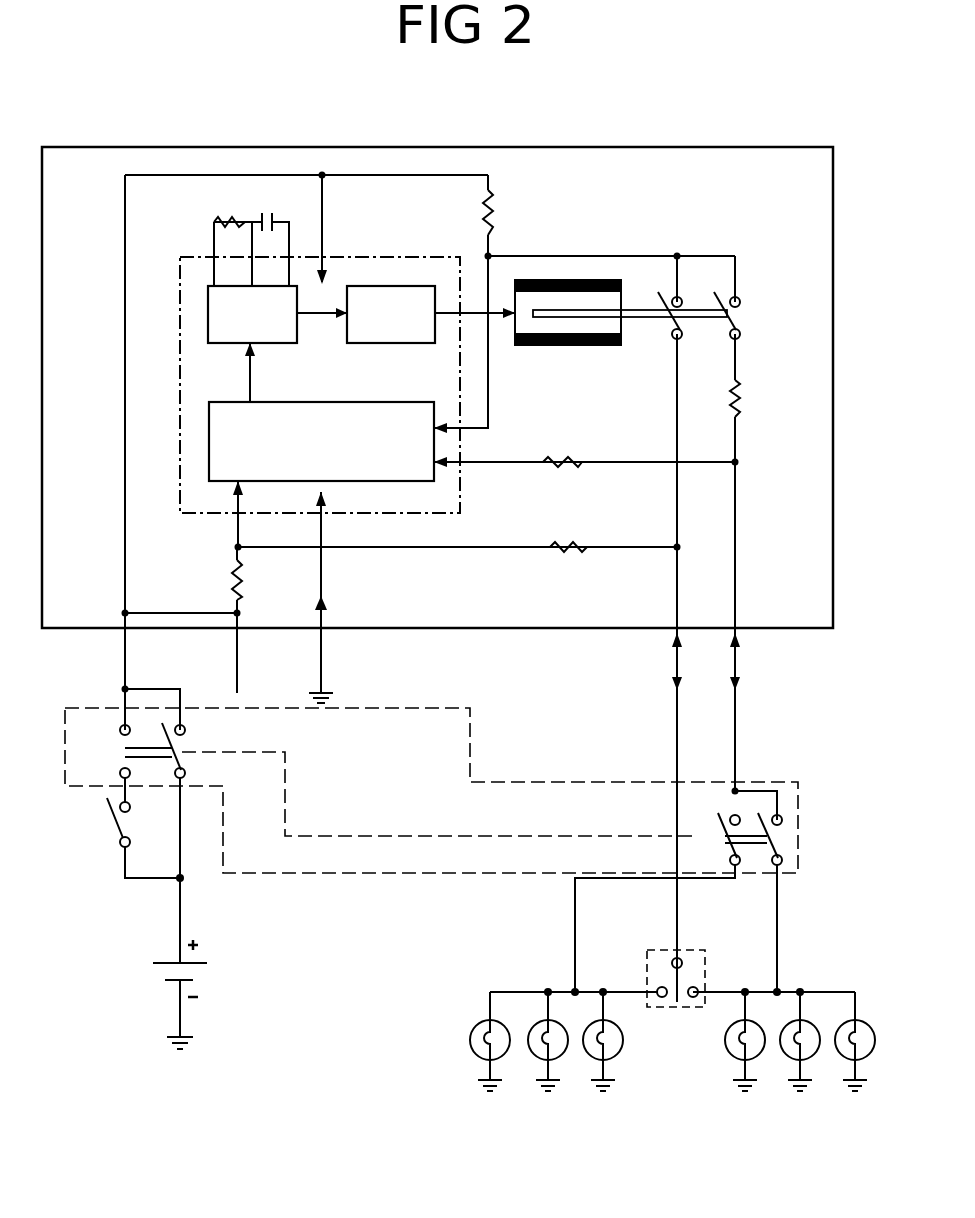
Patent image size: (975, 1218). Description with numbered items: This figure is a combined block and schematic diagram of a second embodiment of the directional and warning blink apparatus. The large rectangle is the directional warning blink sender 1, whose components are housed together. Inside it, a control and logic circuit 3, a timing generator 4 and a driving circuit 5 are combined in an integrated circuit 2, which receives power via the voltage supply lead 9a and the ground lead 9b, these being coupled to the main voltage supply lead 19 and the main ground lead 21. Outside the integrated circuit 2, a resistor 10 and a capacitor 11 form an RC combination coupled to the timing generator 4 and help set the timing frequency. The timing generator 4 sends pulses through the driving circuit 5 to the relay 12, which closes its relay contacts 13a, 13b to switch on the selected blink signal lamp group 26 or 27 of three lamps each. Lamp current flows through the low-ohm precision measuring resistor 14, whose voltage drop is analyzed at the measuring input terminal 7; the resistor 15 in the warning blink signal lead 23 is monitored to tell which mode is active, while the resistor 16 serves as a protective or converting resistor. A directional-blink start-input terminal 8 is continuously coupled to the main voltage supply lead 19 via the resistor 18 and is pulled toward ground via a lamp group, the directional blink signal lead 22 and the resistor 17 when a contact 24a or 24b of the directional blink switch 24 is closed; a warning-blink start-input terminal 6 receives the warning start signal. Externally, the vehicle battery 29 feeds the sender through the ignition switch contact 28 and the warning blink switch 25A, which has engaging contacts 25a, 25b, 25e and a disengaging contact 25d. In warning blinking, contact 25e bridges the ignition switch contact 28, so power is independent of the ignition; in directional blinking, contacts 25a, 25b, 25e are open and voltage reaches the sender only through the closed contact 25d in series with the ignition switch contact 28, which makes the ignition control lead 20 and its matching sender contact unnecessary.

The directional warning blink sender 1 is at (768, 147).
The integrated circuit 2 is at (462, 494).
The control and logic circuit 3 is at (311, 402).
The timing generator 4 is at (219, 344).
The driving circuit 5 is at (398, 344).
The warning-blink, start-input terminal 6 is at (433, 462).
The measuring input terminal 7 is at (433, 428).
The directional-blink, start-input terminal 8 is at (238, 478).
The voltage supply lead 9a is at (323, 220).
The ground lead 9b is at (323, 537).
The resistor 10 is at (238, 218).
The capacitor 11 is at (270, 200).
The relay 12 is at (583, 345).
The relay contact 13a is at (660, 300).
The relay contact 13b is at (733, 318).
The precision measuring resistor 14 is at (492, 214).
The resistor 15 is at (757, 381).
The resistor 16 is at (577, 457).
The resistor 17 is at (578, 544).
The resistor 18 is at (241, 592).
The main voltage supply lead 19 is at (127, 640).
The ignition control lead 20 is at (238, 643).
The main ground lead 21 is at (322, 642).
The directional blink signal lead 22 is at (675, 702).
The warning blink signal lead 23 is at (737, 717).
The directional blink switch 24 is at (689, 1005).
The directional blink switch contact 24a is at (660, 1000).
The directional blink switch contact 24b is at (703, 985).
The warning blink switch 25A is at (467, 801).
The warning blink switch engaging contact 25a is at (740, 866).
The warning blink switch engaging contact 25b is at (780, 867).
The warning blink switch disengaging contact 25d is at (120, 727).
The warning blink switch engaging contact 25e is at (185, 732).
The blink signal lamp group 26 is at (593, 1060).
The blink signal lamp group 27 is at (845, 1060).
The ignition switch contact 28 is at (110, 825).
The vehicle battery 29 is at (207, 953).